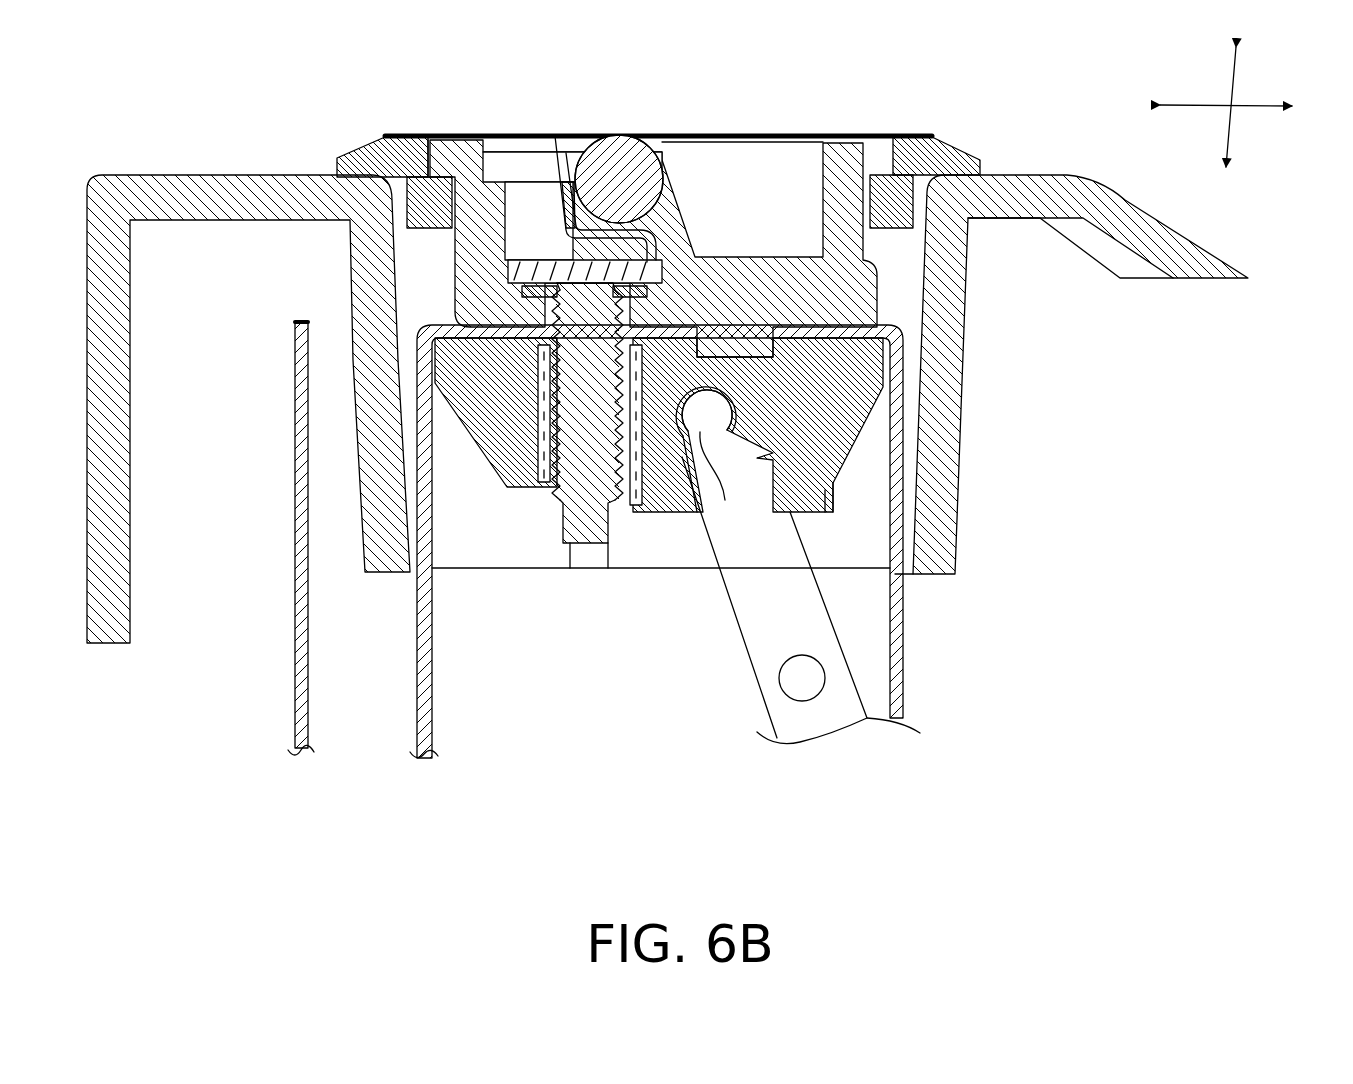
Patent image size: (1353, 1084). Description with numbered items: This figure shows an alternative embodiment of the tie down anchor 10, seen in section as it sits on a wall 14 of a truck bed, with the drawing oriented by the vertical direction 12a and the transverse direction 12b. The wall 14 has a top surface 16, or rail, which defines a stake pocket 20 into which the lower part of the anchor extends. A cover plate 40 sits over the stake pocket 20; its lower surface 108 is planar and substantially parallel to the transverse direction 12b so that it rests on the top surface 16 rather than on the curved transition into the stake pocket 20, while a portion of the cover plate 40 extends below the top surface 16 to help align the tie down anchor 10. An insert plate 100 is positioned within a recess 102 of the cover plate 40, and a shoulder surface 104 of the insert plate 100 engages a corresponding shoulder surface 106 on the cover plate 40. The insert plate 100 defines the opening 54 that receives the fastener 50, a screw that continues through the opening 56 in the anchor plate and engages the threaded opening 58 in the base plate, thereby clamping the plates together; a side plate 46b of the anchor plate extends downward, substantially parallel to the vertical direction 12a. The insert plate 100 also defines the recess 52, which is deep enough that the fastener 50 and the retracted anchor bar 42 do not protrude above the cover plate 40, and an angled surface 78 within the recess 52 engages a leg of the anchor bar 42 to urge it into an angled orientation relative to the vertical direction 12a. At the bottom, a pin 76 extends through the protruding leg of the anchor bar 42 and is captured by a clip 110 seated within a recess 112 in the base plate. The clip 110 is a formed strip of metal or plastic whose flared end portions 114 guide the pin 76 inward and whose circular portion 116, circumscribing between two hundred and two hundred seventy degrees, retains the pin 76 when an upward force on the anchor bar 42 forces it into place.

The tie down anchor 10 is at (958, 98).
The vertical direction 12a is at (1227, 95).
The transverse direction 12b is at (1253, 110).
The wall 14 is at (1005, 368).
The top surface 16 is at (205, 175).
The stake pocket 20 is at (373, 203).
The cover plate 40 is at (248, 360).
The anchor bar 42 is at (625, 162).
The side plate 46b is at (432, 717).
The fastener 50 is at (550, 480).
The recess 52 is at (820, 200).
The opening 54 is at (432, 399).
The opening 56 is at (548, 342).
The threaded opening 58 is at (432, 399).
The pin 76 is at (805, 685).
The angled surface 78 is at (568, 178).
The insert plate 100 is at (737, 224).
The recess 102 is at (651, 114).
The shoulder surface 104 is at (428, 160).
The shoulder surface 106 is at (353, 150).
The lower surface 108 is at (932, 184).
The clip 110 is at (710, 470).
The recess 112 is at (832, 479).
The flared end portion 114 is at (705, 470).
The circular portion 116 is at (761, 593).